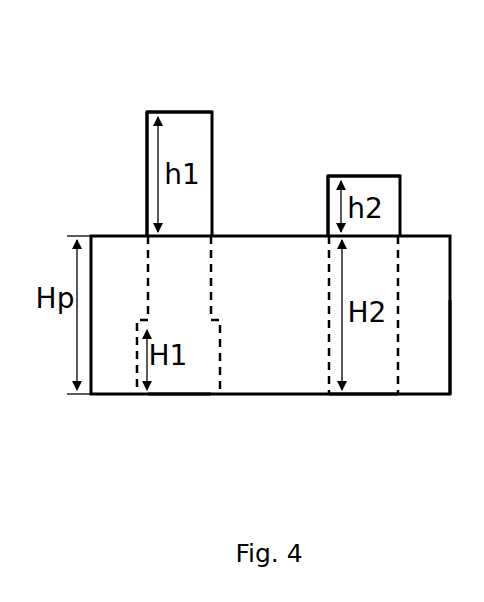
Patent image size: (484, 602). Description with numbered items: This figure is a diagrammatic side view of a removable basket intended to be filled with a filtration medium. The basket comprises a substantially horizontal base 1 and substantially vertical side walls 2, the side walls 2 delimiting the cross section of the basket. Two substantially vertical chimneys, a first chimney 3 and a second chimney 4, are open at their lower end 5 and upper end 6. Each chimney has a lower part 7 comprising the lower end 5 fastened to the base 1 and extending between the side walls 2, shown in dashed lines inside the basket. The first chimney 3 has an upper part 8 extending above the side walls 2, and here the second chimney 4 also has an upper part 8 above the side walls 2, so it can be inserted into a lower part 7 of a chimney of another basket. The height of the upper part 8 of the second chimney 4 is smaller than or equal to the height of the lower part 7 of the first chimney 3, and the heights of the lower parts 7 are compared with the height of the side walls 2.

The base 1 is at (268, 403).
The side walls 2 is at (456, 386).
The first chimney 3 is at (215, 110).
The second chimney 4 is at (401, 174).
The lower end 5 is at (208, 403).
The upper end 6 is at (177, 109).
The lower part 7 is at (212, 358).
The upper part 8 is at (145, 118).